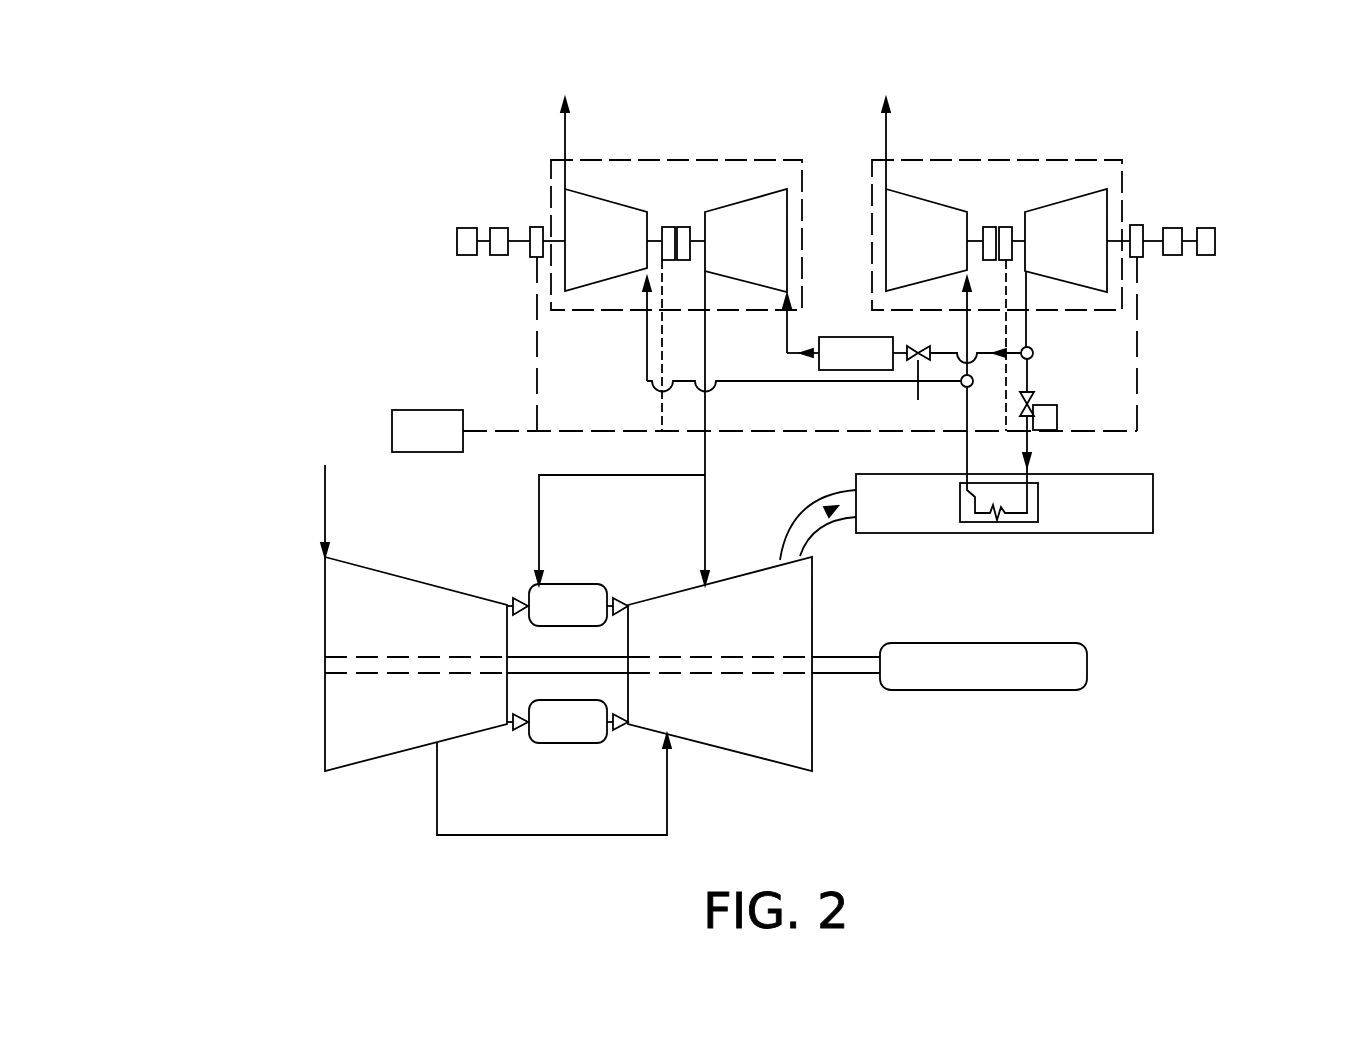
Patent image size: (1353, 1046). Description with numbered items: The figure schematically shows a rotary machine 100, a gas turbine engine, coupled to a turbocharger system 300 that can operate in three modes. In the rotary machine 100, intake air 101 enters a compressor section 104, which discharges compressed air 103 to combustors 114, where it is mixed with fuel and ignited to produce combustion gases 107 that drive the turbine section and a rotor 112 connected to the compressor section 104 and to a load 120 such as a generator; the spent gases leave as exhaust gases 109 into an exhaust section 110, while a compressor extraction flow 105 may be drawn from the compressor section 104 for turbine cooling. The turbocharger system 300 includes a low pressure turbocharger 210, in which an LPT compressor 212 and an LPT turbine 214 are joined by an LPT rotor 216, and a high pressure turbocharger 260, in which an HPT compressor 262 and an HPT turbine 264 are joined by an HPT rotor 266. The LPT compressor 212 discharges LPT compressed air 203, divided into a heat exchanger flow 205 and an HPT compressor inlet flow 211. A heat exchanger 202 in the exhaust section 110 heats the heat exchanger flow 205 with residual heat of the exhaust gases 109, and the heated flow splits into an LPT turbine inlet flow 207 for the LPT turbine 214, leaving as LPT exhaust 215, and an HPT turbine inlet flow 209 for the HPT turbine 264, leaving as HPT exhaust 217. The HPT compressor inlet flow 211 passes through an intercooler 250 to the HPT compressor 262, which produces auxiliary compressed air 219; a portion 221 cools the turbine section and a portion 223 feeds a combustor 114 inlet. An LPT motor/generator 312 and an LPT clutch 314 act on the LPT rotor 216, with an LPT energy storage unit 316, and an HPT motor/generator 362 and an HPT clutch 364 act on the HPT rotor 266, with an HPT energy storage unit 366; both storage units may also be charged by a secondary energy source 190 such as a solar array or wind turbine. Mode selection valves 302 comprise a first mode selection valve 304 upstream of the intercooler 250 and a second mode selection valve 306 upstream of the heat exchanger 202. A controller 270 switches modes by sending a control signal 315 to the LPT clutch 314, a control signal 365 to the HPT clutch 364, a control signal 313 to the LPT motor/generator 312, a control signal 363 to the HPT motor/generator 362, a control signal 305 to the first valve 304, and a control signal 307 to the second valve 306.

The rotary machine 100 is at (627, 672).
The intake air 101 is at (322, 500).
The compressed air 103 is at (525, 598).
The compressor section 104 is at (360, 762).
The compressor extraction flow 105 is at (478, 837).
The combustion gases 107 is at (615, 600).
The exhaust gases 109 is at (805, 519).
The exhaust section 110 is at (932, 533).
The rotor 112 is at (528, 656).
The combustors 114 is at (573, 584).
The load 120 is at (1015, 690).
The secondary energy source 190 is at (457, 241).
The heat exchanger 202 is at (1017, 523).
The LPT compressed air 203 is at (1027, 293).
The heat exchanger flow 205 is at (1033, 370).
The LPT turbine inlet flow 207 is at (966, 298).
The HPT turbine inlet flow 209 is at (755, 381).
The low pressure turbocharger 210 is at (1073, 160).
The HPT compressor inlet flow 211 is at (790, 336).
The LPT compressor 212 is at (1066, 240).
The LPT turbine 214 is at (926, 240).
The LPT exhaust 215 is at (890, 133).
The LPT rotor 216 is at (1014, 230).
The HPT exhaust 217 is at (567, 132).
The auxiliary compressed air 219 is at (708, 298).
The portion of auxiliary compressed air 221 is at (707, 530).
The portion of auxiliary compressed air 223 is at (541, 510).
The intercooler 250 is at (863, 353).
The high pressure turbocharger 260 is at (748, 160).
The HPT compressor 262 is at (746, 240).
The HPT turbine 264 is at (606, 240).
The HPT rotor 266 is at (665, 227).
The controller 270 is at (764, 431).
The turbocharger system 300 is at (372, 292).
The mode selection valves 302 is at (1012, 410).
The first mode selection valve 304 is at (913, 362).
The control signal 305 is at (920, 370).
The second mode selection valve 306 is at (1033, 417).
The control signal 307 is at (1057, 413).
The LPT motor/generator 312 is at (1137, 225).
The control signal 313 is at (1138, 382).
The LPT clutch 314 is at (987, 227).
The control signal 315 is at (1003, 405).
The LPT energy storage unit 316 is at (1173, 228).
The HPT motor/generator 362 is at (536, 227).
The control signal 363 is at (535, 357).
The HPT clutch 364 is at (682, 227).
The control signal 365 is at (660, 408).
The HPT energy storage unit 366 is at (498, 228).